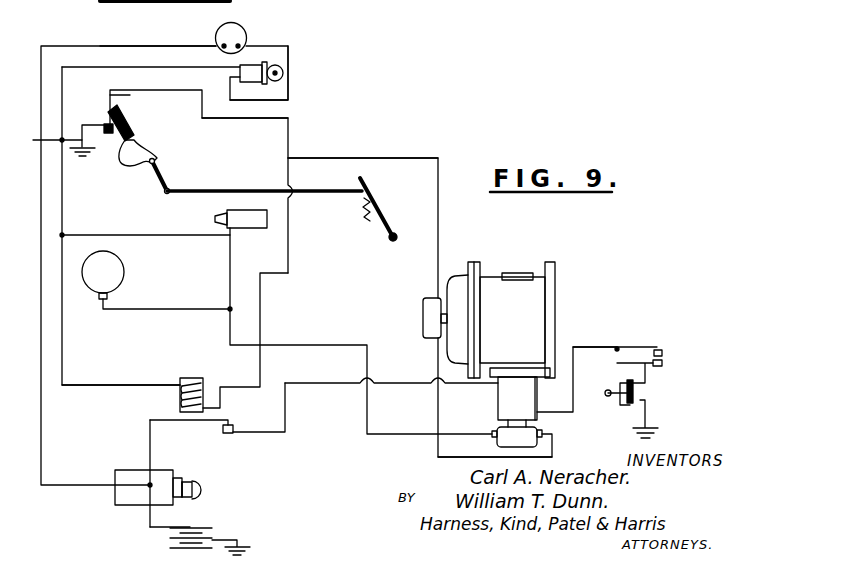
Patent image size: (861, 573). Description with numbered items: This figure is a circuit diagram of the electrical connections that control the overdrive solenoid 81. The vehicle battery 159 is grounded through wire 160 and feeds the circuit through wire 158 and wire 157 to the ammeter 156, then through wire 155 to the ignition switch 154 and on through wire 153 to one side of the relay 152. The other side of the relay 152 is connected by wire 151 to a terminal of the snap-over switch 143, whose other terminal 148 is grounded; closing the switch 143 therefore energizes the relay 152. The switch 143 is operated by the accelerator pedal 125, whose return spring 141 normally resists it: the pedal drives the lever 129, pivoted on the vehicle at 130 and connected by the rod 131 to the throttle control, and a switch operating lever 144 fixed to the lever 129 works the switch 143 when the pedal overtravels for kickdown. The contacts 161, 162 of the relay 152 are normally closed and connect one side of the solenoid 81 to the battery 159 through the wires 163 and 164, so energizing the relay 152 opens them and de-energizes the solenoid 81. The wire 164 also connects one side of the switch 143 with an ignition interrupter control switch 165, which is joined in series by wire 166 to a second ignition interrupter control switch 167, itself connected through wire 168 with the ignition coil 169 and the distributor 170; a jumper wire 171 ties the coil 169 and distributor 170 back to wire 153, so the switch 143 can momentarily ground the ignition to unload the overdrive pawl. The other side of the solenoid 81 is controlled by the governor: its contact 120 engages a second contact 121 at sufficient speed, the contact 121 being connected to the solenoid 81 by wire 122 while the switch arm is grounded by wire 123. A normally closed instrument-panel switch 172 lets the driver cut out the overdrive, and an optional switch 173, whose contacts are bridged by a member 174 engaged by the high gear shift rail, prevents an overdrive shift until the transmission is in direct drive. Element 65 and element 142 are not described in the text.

The motor 65 is at (488, 265).
The solenoid 81 is at (508, 399).
The contact 120 is at (662, 361).
The second contact 121 is at (657, 349).
The wire 122 is at (592, 348).
The wire 123 is at (648, 381).
The accelerator pedal 125 is at (367, 183).
The lever 129 is at (160, 173).
The pivot 130 is at (47, 144).
The rod 131 is at (272, 177).
The accelerator pedal return spring 141 is at (372, 218).
The fixed contact 142 is at (114, 101).
The switch 143 is at (132, 127).
The switch operating lever 144 is at (150, 147).
The terminal 148 is at (110, 121).
The wire 151 is at (222, 120).
The relay 152 is at (204, 366).
The wire 153 is at (118, 368).
The ignition switch 154 is at (283, 73).
The wire 155 is at (268, 45).
The ammeter 156 is at (244, 28).
The wire 157 is at (173, 33).
The wire 158 is at (149, 476).
The battery 159 is at (197, 520).
The wire 160 is at (216, 535).
The relay contact 161 is at (230, 424).
The relay contact 162 is at (231, 434).
The wire 163 is at (287, 386).
The wire 164 is at (350, 158).
The ignition interrupter control switch 165 is at (423, 313).
The wire 166 is at (480, 458).
The second ignition interrupter control switch 167 is at (540, 432).
The wire 168 is at (354, 343).
The ignition coil 169 is at (238, 229).
The distributor 170 is at (120, 283).
The jumper wire 171 is at (173, 225).
The switch 172 is at (574, 392).
The switch 173 is at (640, 407).
The member 174 is at (608, 390).